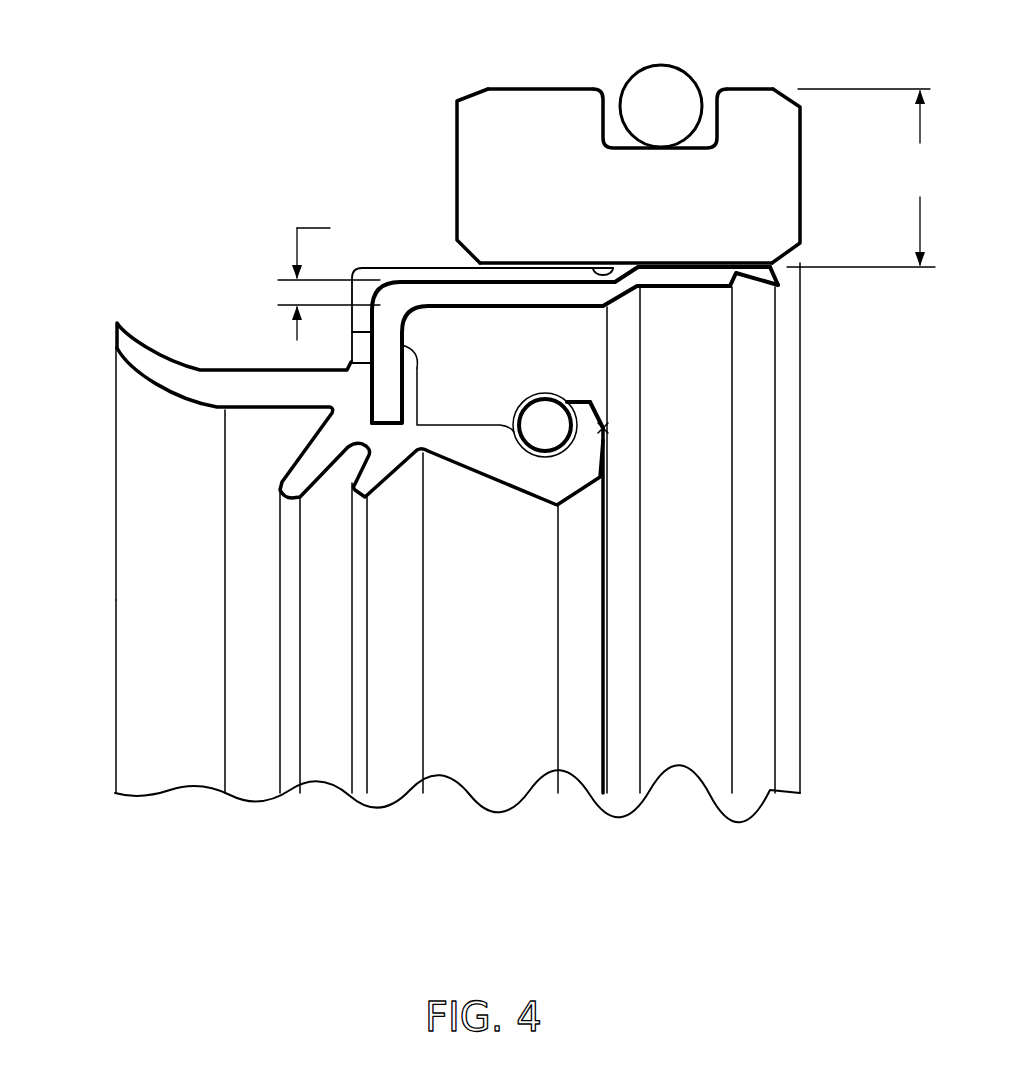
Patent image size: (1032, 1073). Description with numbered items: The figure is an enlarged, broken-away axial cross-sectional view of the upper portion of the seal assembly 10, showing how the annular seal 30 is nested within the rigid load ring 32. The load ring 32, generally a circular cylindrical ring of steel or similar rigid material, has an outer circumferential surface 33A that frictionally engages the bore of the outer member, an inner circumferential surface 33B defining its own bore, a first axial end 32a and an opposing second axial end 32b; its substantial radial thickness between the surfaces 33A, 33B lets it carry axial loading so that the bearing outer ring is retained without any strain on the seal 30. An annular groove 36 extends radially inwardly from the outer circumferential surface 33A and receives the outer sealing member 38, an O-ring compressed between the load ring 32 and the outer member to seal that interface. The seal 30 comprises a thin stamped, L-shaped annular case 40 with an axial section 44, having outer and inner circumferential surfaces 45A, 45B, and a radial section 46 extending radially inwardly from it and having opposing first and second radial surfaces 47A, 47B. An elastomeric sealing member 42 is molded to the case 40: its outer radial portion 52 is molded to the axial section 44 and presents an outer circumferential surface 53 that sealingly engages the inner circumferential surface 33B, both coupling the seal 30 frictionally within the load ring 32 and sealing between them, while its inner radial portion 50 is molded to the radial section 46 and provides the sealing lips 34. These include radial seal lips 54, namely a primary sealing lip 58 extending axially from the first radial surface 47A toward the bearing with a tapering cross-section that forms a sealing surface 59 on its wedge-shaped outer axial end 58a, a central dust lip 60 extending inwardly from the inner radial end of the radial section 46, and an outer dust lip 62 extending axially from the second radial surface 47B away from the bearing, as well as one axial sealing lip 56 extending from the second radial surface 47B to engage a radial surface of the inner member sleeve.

The seal assembly 10 is at (172, 129).
The annular seal 30 is at (230, 261).
The load ring 32 is at (618, 133).
The first axial end 32a is at (800, 177).
The second axial end 32b is at (457, 137).
The outer circumferential surface 33A is at (540, 87).
The inner circumferential surface 33B is at (613, 260).
The sealing lip 34 is at (201, 352).
The annular groove 36 is at (665, 146).
The outer sealing member 38 is at (660, 78).
The annular case 40 is at (803, 440).
The elastomeric sealing member 42 is at (94, 500).
The axial section 44 is at (730, 276).
The outer circumferential surface 45A is at (712, 262).
The inner circumferential surface 45B is at (708, 288).
The radial section 46 is at (410, 356).
The first radial surface 47A is at (417, 380).
The second radial surface 47B is at (370, 373).
The inner radial portion 50 is at (575, 312).
The outer radial portion 52 is at (453, 294).
The outer circumferential surface 53 is at (543, 258).
The radial seal lips 54 is at (274, 700).
The axial sealing lip 56 is at (116, 621).
The primary sealing lip 58 is at (606, 426).
The wedge-shaped outer axial end 58a is at (580, 467).
The sealing surface 59 is at (560, 727).
The central dust lip 60 is at (352, 632).
The outer dust lip 62 is at (280, 573).